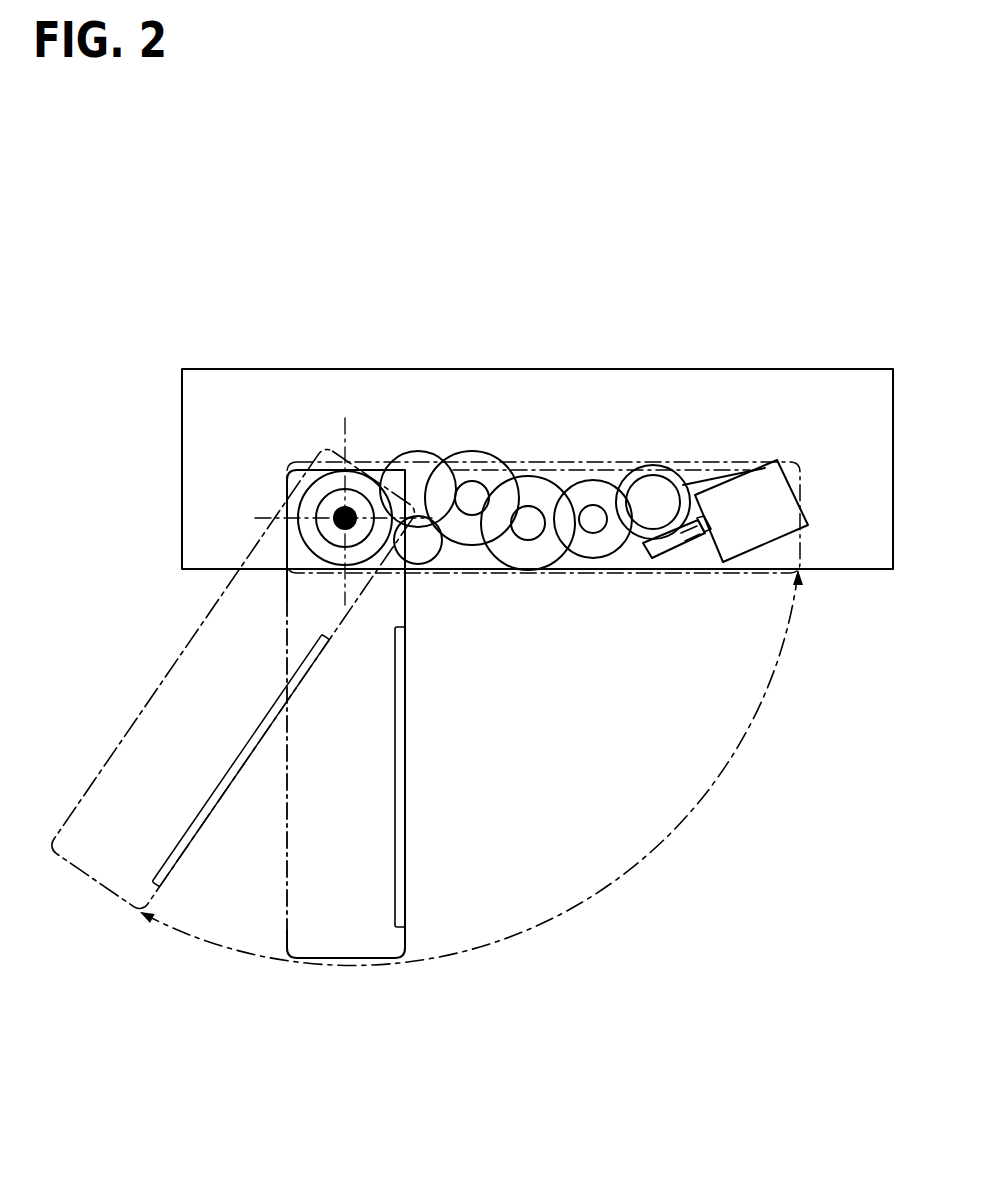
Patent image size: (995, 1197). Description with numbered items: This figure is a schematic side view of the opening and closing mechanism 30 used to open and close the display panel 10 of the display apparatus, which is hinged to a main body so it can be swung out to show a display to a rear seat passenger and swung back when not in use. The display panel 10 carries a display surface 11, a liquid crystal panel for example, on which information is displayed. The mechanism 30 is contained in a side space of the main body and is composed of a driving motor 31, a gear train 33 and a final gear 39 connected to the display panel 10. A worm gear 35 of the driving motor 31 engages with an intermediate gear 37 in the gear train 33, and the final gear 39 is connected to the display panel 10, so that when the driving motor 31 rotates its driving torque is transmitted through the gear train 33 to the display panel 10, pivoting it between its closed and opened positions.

The display panel 10 is at (322, 980).
The display surface 11 is at (402, 780).
The opening and closing mechanism 30 is at (786, 356).
The driving motor 31 is at (783, 503).
The gear train 33 is at (683, 447).
The worm gear 35 is at (660, 547).
The intermediate gear 37 is at (718, 474).
The final gear 39 is at (360, 485).